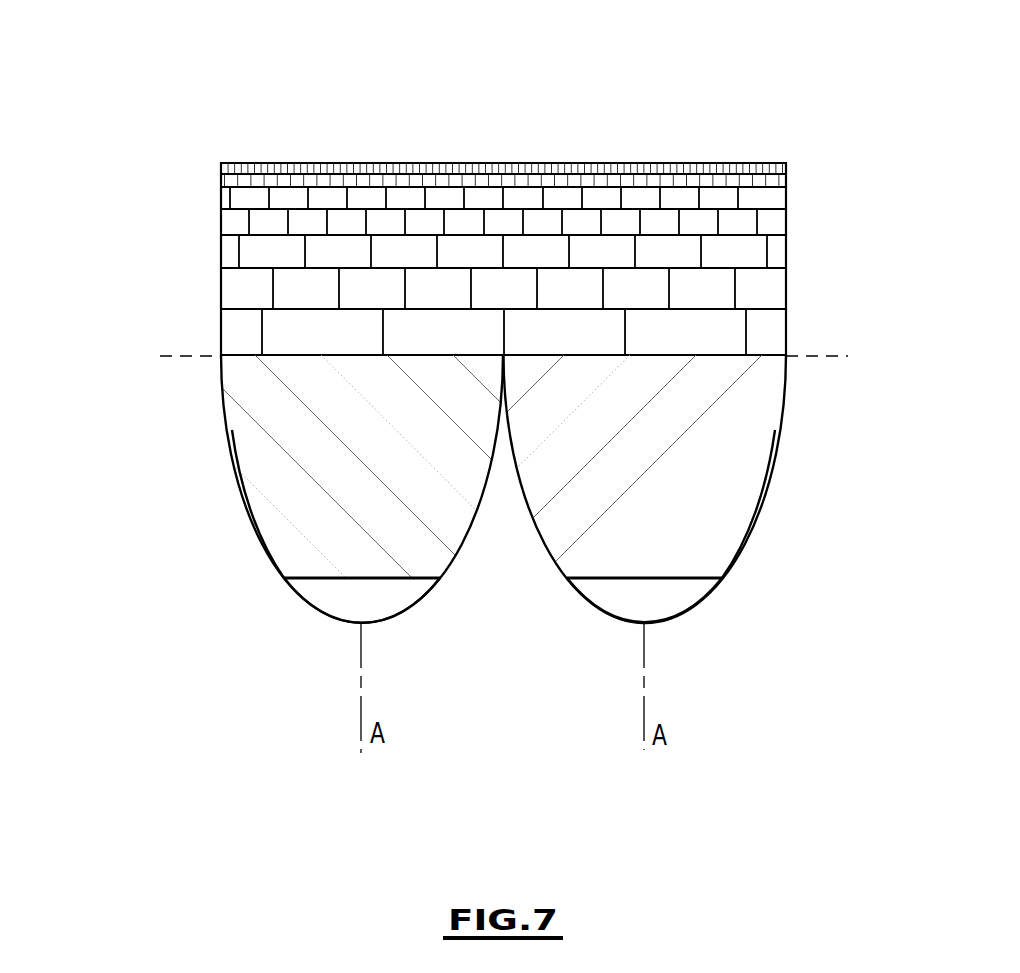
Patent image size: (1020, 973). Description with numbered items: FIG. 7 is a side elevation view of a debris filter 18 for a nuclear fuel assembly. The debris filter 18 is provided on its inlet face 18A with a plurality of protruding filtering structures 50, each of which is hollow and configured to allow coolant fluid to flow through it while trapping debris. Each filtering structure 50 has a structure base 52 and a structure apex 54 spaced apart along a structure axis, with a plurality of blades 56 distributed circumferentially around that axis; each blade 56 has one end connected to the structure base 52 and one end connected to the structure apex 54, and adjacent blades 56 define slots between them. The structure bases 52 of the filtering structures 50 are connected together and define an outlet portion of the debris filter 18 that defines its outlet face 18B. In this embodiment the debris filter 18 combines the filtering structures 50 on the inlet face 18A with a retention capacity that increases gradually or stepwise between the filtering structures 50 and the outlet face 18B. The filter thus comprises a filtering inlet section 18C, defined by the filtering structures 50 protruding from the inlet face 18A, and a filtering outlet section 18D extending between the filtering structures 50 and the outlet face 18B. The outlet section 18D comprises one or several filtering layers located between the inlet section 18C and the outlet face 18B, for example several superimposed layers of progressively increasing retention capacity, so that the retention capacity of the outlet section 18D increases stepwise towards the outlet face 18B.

The debris filter 18 is at (814, 104).
The inlet face 18A is at (240, 635).
The outlet face 18B is at (633, 163).
The filtering inlet section 18C is at (170, 467).
The filtering outlet section 18D is at (170, 268).
The filtering structure 50 is at (240, 568).
The structure base 52 is at (205, 357).
The structure apex 54 is at (340, 597).
The blade 56 is at (290, 530).